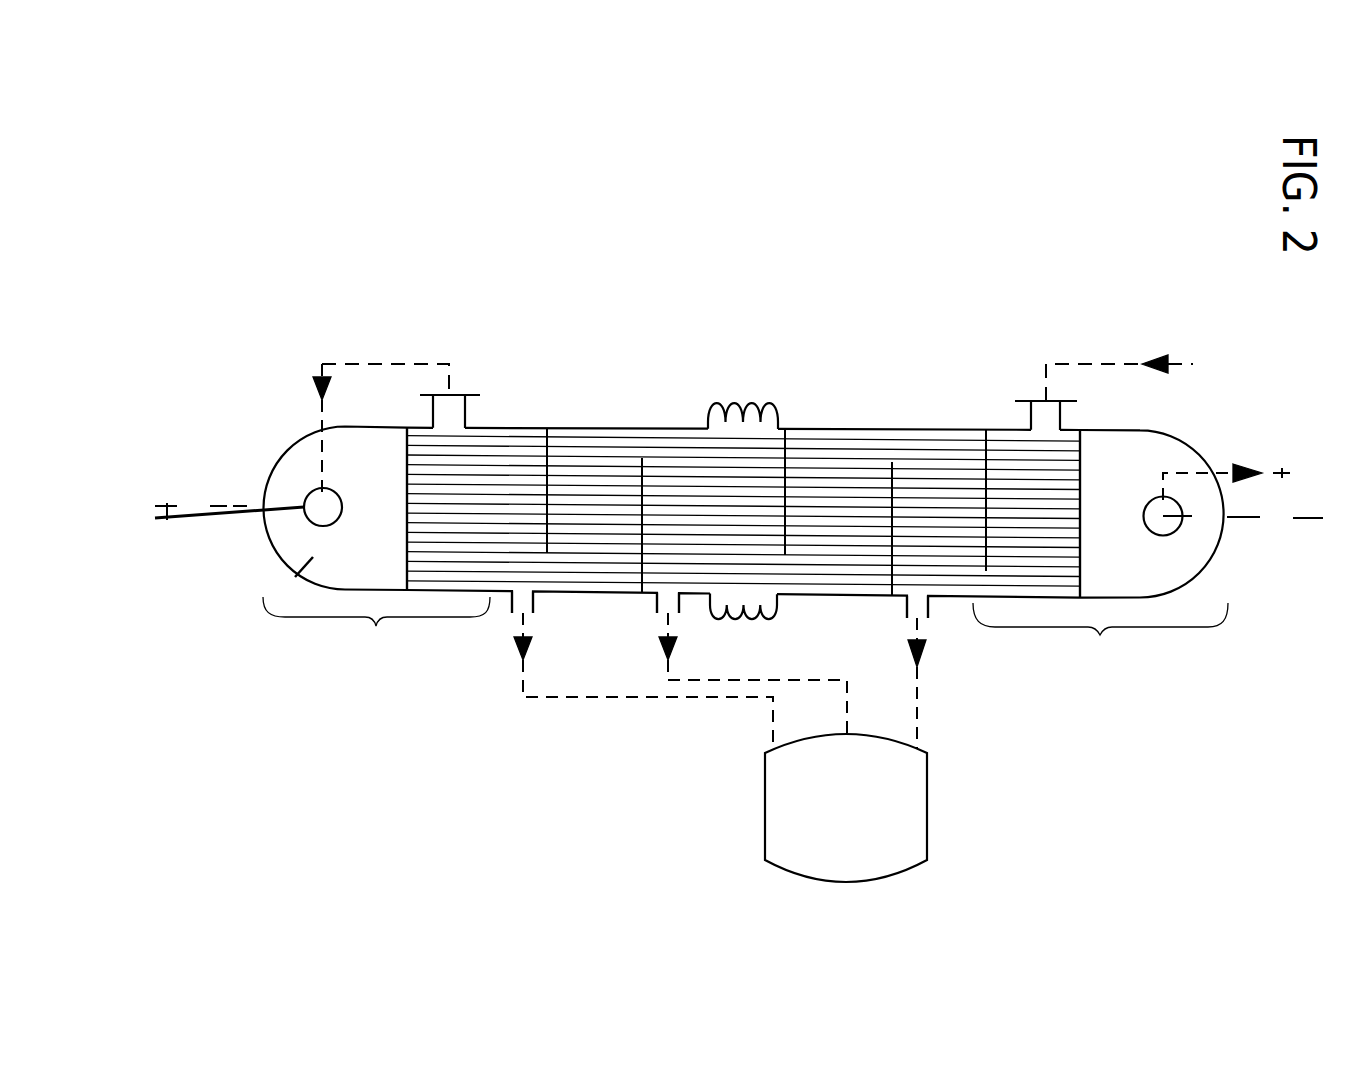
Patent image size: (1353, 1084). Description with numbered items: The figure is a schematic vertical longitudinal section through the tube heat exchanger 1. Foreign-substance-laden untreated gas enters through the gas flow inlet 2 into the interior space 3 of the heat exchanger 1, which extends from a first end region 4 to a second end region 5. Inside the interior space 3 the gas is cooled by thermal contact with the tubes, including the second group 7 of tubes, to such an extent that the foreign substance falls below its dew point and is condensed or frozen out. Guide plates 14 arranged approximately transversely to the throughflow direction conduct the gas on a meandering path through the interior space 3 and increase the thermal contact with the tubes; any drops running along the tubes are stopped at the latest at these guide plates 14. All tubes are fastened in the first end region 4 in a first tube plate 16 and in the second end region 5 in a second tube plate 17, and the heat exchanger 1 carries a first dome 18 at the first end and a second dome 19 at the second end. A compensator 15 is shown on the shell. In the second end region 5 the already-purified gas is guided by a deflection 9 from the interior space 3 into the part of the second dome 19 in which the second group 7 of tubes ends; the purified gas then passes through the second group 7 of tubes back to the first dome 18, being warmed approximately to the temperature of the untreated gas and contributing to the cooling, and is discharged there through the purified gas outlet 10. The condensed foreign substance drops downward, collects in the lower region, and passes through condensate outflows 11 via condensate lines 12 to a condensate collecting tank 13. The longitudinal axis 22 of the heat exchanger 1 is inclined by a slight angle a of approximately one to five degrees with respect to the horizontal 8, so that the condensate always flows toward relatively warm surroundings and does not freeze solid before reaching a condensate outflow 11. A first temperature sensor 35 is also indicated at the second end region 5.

The heat exchanger 1 is at (844, 430).
The gas flow inlet 2 is at (1193, 363).
The interior space 3 is at (597, 470).
The first end region 4 is at (1100, 639).
The second end region 5 is at (376, 634).
The second group of tubes 7 is at (957, 462).
The horizontal 8 is at (160, 500).
The deflection 9 is at (392, 366).
The purified gas outlet 10 is at (1283, 468).
The condensate outflow 11 is at (530, 612).
The condensate line 12 is at (847, 692).
The condensate collecting tank 13 is at (912, 830).
The guide plates 14 is at (547, 470).
The compensator 15 is at (733, 403).
The first tube plate 16 is at (1080, 457).
The second tube plate 17 is at (383, 452).
The first dome 18 is at (1142, 553).
The second dome 19 is at (288, 470).
The longitudinal axis 22 is at (188, 520).
The first temperature sensor 35 is at (288, 567).
The angle of the longitudinal axis with respect to the horizontal a is at (150, 512).